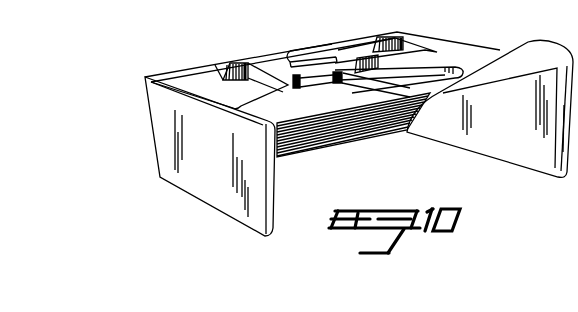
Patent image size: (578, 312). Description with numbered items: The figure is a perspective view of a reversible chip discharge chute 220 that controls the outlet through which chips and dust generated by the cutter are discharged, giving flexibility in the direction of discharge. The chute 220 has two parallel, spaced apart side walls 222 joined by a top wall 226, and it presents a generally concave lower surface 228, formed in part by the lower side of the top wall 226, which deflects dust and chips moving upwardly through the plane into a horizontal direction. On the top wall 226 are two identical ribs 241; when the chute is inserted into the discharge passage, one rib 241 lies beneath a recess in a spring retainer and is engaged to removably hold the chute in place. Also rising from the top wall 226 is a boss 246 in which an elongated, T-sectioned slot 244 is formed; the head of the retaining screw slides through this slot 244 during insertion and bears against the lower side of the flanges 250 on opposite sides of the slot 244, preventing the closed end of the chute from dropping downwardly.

The chip discharge chute 220 is at (143, 103).
The side wall 222 is at (160, 152).
The top wall 226 is at (433, 73).
The concave lower surface 228 is at (302, 143).
The rib 241 is at (215, 67).
The T-sectioned slot 244 is at (285, 62).
The boss 246 is at (310, 83).
The flange 250 is at (253, 58).